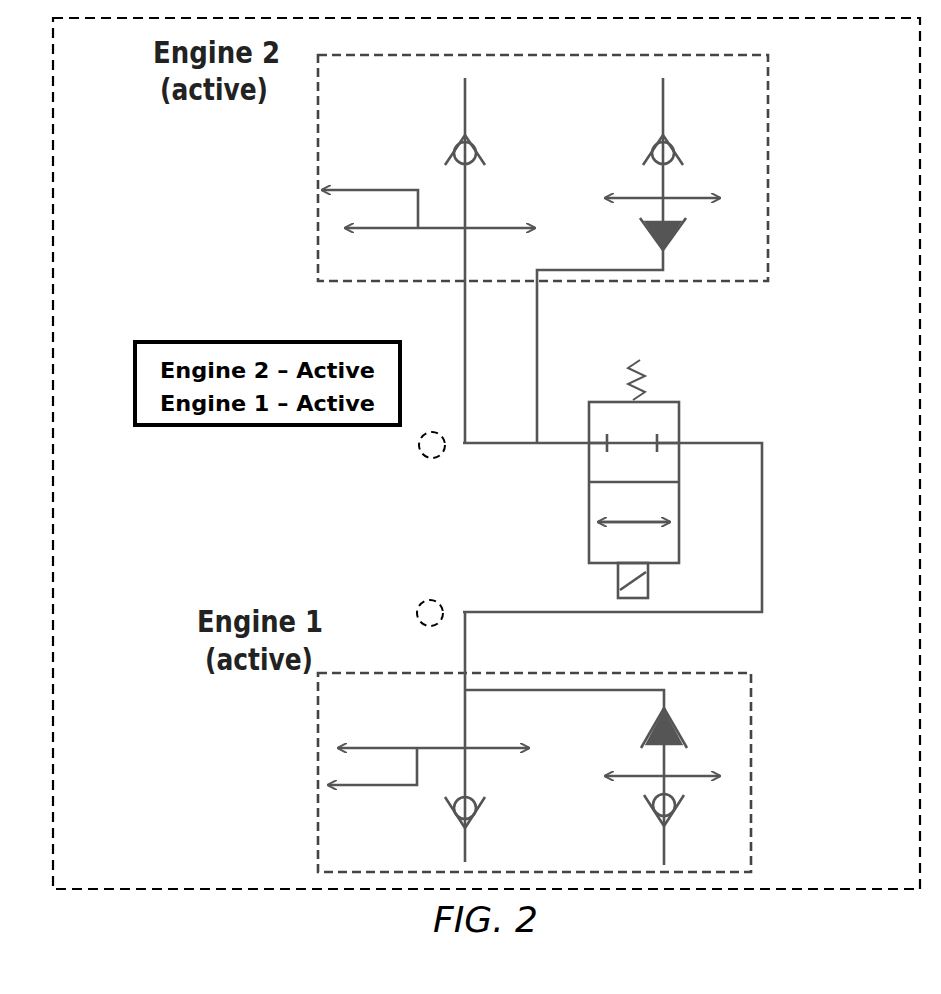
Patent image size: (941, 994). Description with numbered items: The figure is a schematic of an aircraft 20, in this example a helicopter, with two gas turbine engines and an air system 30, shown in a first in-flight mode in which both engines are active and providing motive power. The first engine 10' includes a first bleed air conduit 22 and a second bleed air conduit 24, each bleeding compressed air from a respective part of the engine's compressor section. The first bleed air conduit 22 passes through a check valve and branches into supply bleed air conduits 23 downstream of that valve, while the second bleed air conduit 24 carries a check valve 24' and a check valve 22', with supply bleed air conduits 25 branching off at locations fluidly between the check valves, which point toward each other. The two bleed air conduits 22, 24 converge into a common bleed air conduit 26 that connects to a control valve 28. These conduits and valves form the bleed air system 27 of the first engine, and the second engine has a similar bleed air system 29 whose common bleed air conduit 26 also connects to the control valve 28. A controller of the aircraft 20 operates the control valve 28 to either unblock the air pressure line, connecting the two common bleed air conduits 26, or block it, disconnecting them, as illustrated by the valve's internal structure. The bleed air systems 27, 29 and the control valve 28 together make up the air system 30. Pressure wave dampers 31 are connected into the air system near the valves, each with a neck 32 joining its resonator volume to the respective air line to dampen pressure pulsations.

The aircraft 20 is at (893, 59).
The first engine 10' is at (534, 772).
The first bleed air conduit 22 is at (475, 471).
The check valve 22' is at (495, 481).
The supply bleed air conduits 23 is at (465, 228).
The second bleed air conduit 24 is at (600, 471).
The check valve 24' is at (692, 480).
The supply bleed air conduits 25 is at (663, 198).
The common bleed air conduit 26 is at (572, 445).
The bleed air system of the first engine 27 is at (400, 604).
The control valve 28 is at (663, 400).
The bleed air system of the second engine 29 is at (405, 487).
The air system 30 is at (170, 222).
The pressure wave damper 31 is at (437, 430).
The neck 32 is at (452, 445).